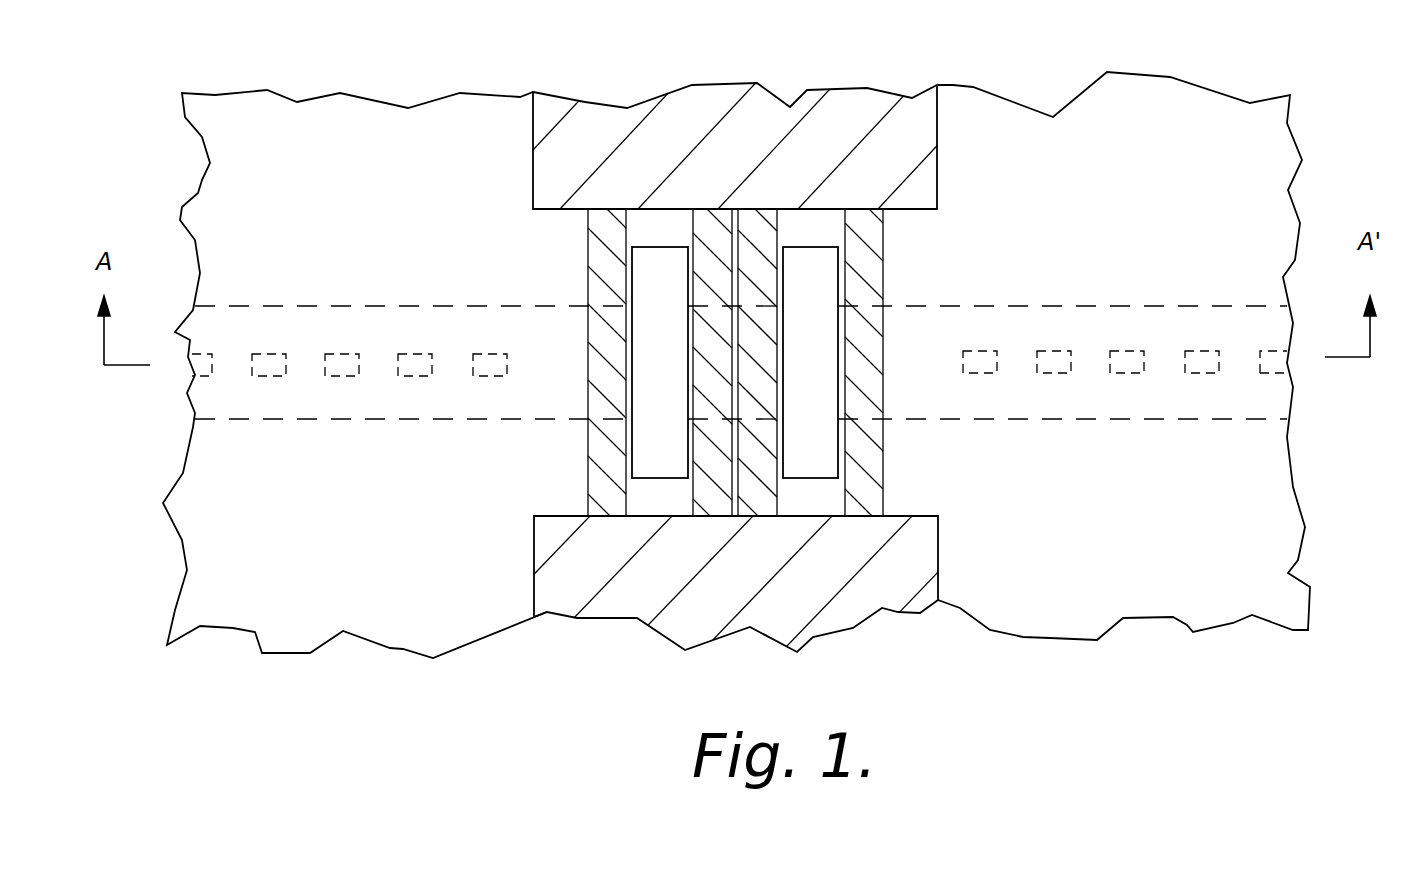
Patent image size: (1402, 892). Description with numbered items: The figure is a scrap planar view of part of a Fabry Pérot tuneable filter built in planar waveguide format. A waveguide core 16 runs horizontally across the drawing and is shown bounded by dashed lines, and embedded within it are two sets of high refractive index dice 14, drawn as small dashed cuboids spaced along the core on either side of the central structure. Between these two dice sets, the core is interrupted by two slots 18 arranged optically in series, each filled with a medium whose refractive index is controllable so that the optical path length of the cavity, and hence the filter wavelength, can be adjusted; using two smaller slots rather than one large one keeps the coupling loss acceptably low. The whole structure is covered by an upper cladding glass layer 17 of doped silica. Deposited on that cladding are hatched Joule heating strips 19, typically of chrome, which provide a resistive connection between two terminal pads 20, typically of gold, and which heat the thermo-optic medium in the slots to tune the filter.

The dice of inclusion layer material 14 is at (490, 367).
The waveguide core 16 is at (1068, 303).
The upper cladding glass layer 17 is at (298, 609).
The controllable refractive index medium filled slots 18 is at (663, 287).
The Joule heating strips 19 is at (858, 452).
The terminal pads 20 is at (685, 127).